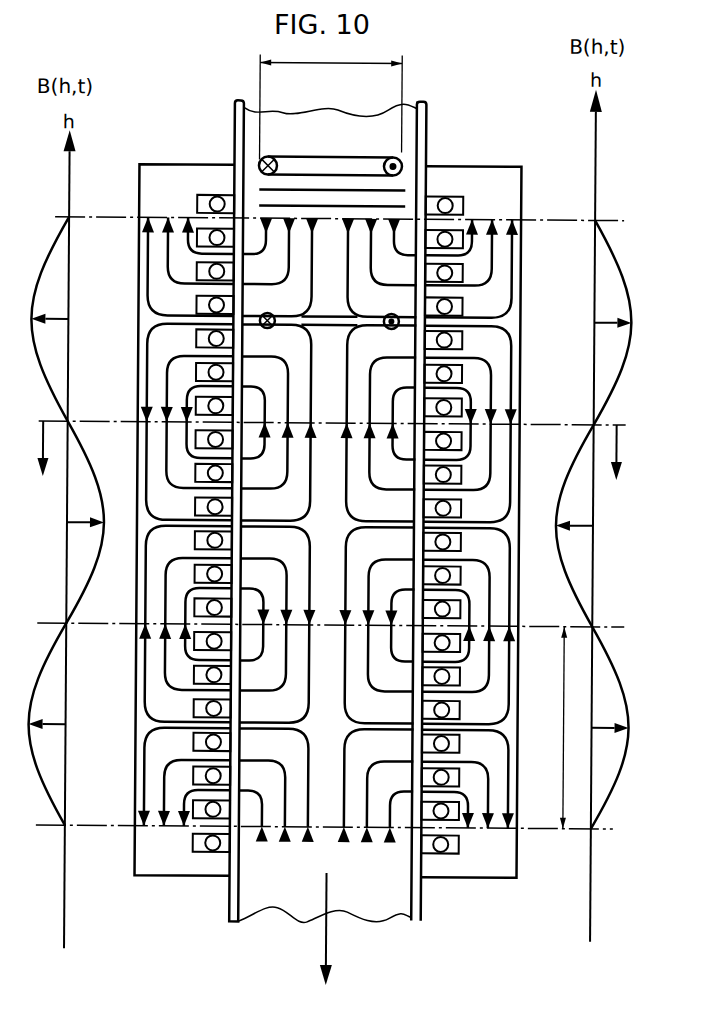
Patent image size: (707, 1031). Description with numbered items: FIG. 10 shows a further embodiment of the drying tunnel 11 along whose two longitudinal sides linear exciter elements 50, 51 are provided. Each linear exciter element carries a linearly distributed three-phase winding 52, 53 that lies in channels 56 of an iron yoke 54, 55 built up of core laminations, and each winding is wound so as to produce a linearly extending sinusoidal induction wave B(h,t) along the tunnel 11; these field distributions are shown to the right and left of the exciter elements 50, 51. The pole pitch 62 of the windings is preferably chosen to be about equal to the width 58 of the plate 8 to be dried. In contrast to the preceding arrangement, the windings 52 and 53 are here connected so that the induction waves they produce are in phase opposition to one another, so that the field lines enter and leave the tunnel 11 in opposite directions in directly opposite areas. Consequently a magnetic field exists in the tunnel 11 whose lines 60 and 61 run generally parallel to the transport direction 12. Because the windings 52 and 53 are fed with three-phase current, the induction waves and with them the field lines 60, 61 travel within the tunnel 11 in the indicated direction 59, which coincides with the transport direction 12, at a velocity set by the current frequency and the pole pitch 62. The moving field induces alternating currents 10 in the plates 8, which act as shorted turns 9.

The plate 8 is at (264, 188).
The shorted turn 9 is at (312, 158).
The alternating current 10 is at (391, 157).
The tunnel 11 is at (236, 118).
The transport direction 12 is at (331, 905).
The linear exciter element 50 is at (500, 878).
The linear exciter element 51 is at (181, 860).
The three-phase winding 52 is at (453, 203).
The three-phase winding 53 is at (197, 202).
The iron yoke 54 is at (514, 338).
The iron yoke 55 is at (144, 320).
The channel 56 is at (465, 340).
The width of plate 58 is at (316, 65).
The direction of travel 59 is at (42, 447).
The magnetic field line 60 is at (311, 692).
The magnetic field line 61 is at (313, 345).
The pole pitch 62 is at (565, 725).